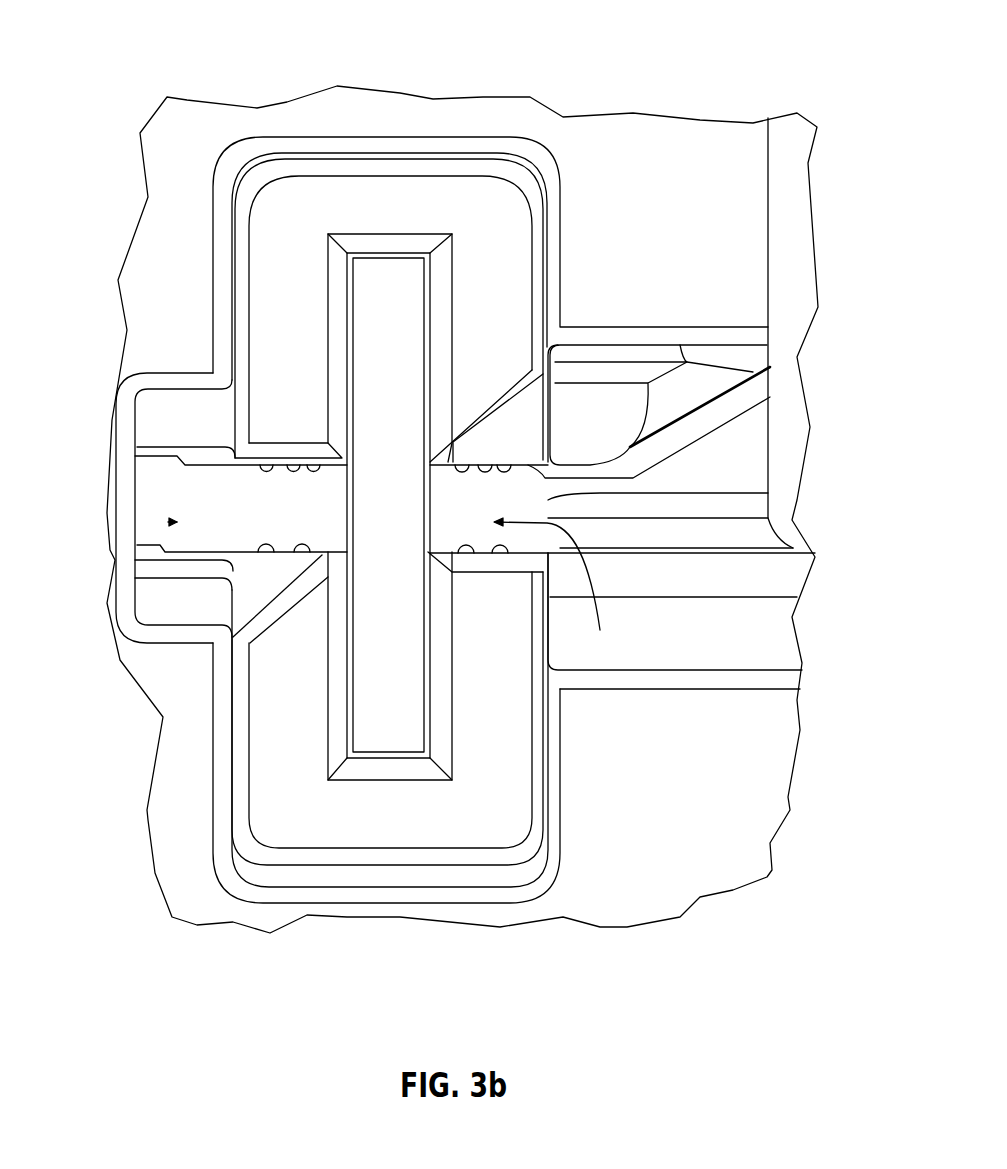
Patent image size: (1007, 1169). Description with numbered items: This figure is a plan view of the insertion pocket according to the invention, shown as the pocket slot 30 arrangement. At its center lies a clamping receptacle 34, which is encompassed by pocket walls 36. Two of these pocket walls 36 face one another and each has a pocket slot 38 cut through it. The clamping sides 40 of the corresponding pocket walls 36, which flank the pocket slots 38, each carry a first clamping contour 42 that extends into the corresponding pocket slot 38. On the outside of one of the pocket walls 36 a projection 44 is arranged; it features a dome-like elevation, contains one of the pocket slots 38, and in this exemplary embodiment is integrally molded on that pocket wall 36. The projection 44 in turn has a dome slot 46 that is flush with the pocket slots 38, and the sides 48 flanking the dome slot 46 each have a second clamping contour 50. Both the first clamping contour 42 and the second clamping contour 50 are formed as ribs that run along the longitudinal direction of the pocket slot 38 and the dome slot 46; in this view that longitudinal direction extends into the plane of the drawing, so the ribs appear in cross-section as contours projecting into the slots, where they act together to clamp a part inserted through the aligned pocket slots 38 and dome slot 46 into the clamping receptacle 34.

The pocket slot 30 is at (182, 72).
The clamping receptacle 34 is at (388, 312).
The pocket walls 36 is at (285, 268).
The pocket slot 38 is at (282, 497).
The clamping sides 40 is at (768, 493).
The first clamping contour 42 is at (505, 463).
The projection 44 is at (167, 418).
The dome slot 46 is at (168, 522).
The sides 48 is at (170, 455).
The second clamping contour 50 is at (147, 467).